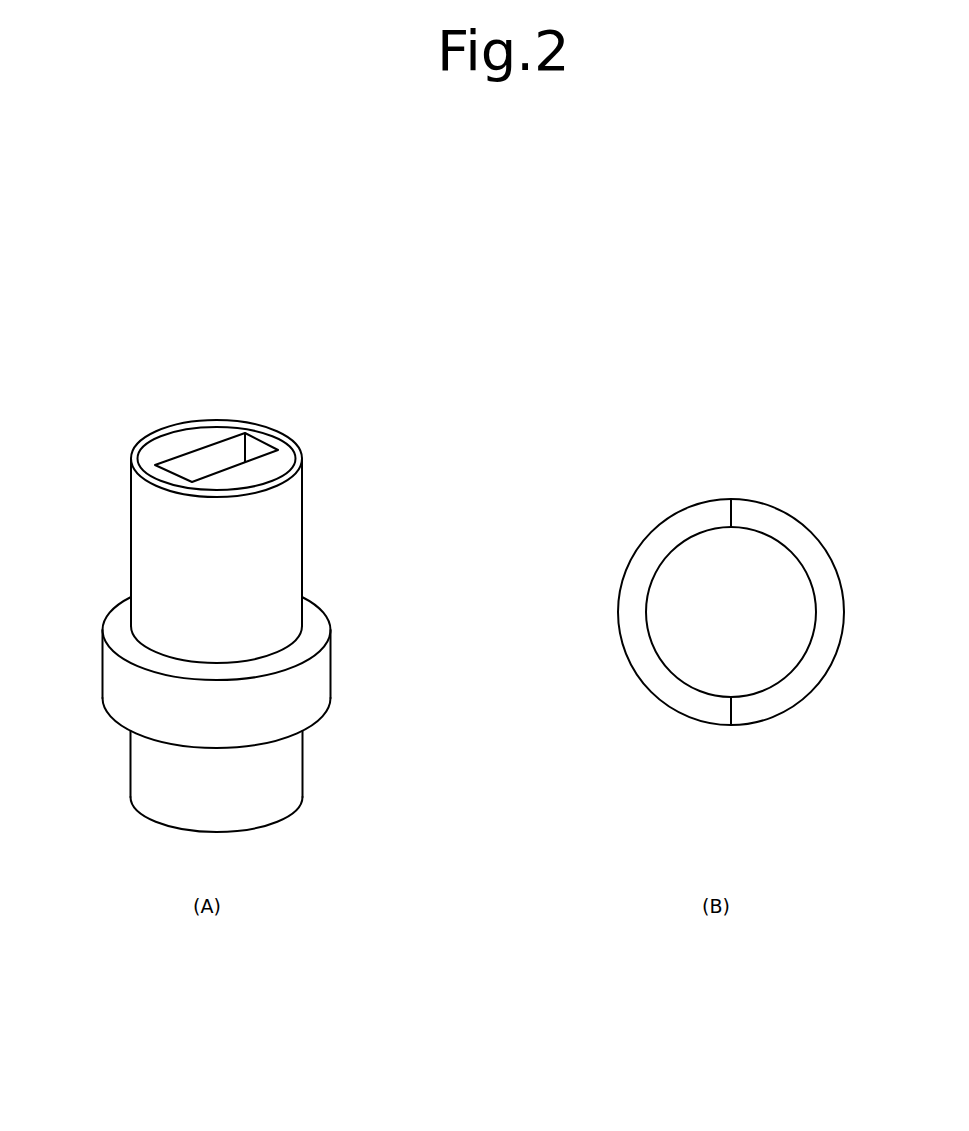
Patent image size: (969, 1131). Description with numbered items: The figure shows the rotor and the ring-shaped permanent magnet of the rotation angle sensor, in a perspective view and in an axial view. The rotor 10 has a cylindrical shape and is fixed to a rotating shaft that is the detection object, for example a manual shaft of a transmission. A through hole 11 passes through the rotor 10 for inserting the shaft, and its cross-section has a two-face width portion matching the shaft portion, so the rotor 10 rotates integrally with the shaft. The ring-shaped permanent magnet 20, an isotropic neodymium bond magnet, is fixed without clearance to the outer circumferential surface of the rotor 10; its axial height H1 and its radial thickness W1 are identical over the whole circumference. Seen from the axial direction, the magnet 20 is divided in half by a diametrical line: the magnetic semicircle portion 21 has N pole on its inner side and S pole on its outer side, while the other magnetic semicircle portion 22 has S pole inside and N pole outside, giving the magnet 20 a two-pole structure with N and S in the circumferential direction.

The rotor 10 is at (257, 447).
The through hole 11 is at (216, 457).
The ring-shaped permanent magnet 20 is at (315, 673).
The magnetic semicircle portion 21 is at (747, 713).
The magnetic semicircle portion 22 is at (712, 712).
The height H1 is at (97, 630).
The thickness W1 is at (700, 547).